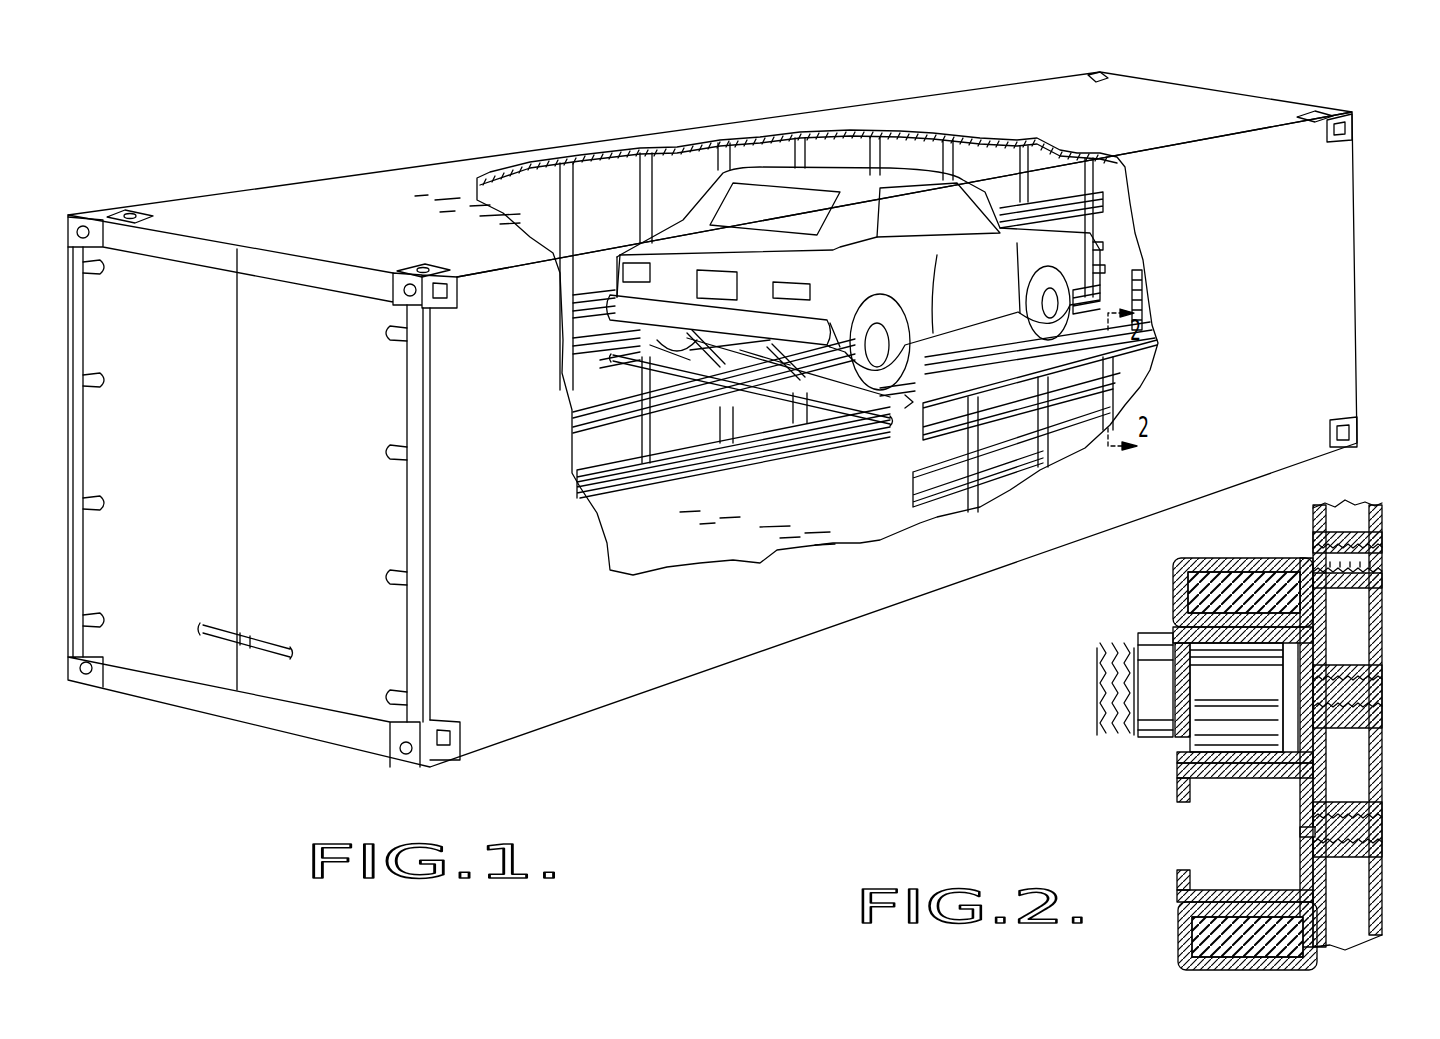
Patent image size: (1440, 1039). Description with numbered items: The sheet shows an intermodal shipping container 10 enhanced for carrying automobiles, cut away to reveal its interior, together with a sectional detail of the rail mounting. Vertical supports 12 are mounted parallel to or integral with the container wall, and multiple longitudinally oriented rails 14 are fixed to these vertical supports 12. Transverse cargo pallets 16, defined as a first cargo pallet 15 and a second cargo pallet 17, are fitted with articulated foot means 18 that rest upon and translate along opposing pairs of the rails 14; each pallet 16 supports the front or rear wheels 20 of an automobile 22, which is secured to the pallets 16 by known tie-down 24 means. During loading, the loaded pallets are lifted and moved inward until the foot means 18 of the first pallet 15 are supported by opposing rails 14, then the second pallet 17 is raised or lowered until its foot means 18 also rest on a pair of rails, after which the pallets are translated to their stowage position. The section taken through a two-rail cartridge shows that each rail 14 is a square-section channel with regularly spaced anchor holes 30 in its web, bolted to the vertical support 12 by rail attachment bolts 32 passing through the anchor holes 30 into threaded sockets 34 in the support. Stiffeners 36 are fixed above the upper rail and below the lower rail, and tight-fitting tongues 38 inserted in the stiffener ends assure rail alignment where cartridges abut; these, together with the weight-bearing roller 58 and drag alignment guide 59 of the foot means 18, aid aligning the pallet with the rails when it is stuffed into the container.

In FIG. 1, the intermodal shipping container 10 is at (712, 419).
In FIG. 1, the vertical support 12 is at (580, 167).
In FIG. 2, the vertical support 12 is at (1383, 773).
In FIG. 1, the longitudinal rail 14 is at (560, 309).
In FIG. 2, the longitudinal rail 14 is at (1177, 760).
In FIG. 1, the first cargo pallet 15 is at (1128, 272).
In FIG. 1, the transverse cargo pallet 16 is at (1155, 333).
In FIG. 1, the second cargo pallet 17 is at (837, 402).
In FIG. 1, the articulated foot means 18 is at (913, 390).
In FIG. 2, the articulated foot means 18 is at (1098, 757).
In FIG. 1, the wheel 20 is at (882, 300).
In FIG. 1, the automobile 22 is at (910, 170).
In FIG. 1, the tie-down 24 is at (700, 333).
In FIG. 2, the anchor hole 30 is at (1309, 679).
In FIG. 2, the rail attachment bolt 32 is at (1380, 698).
In FIG. 2, the vertical support threaded socket 34 is at (1380, 550).
In FIG. 2, the stiffener 36 is at (1175, 595).
In FIG. 2, the tongue 38 is at (1235, 577).
In FIG. 2, the roller 58 is at (1250, 700).
In FIG. 2, the drag alignment guide 59 is at (1142, 637).